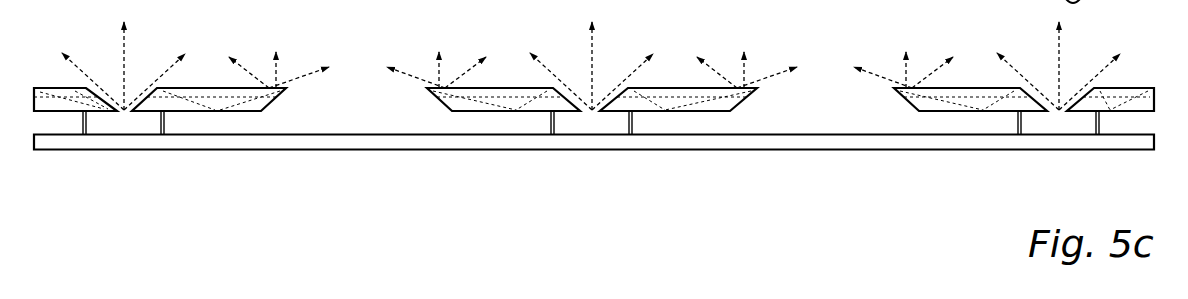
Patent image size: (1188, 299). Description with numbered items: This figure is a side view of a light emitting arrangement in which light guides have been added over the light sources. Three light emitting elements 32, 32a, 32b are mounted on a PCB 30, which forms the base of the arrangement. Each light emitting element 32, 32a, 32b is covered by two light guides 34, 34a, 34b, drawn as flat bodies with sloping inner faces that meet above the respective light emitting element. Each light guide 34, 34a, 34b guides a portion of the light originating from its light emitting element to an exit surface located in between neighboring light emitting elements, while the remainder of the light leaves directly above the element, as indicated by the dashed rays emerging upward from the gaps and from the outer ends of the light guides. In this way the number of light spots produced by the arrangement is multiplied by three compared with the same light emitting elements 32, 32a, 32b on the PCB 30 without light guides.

The PCB 30 is at (820, 150).
The light emitting element 32 is at (596, 120).
The light emitting element 32a is at (117, 123).
The light emitting element 32b is at (1063, 120).
The light guide 34 is at (198, 113).
The light guide 34a is at (468, 115).
The light guide 34b is at (665, 115).